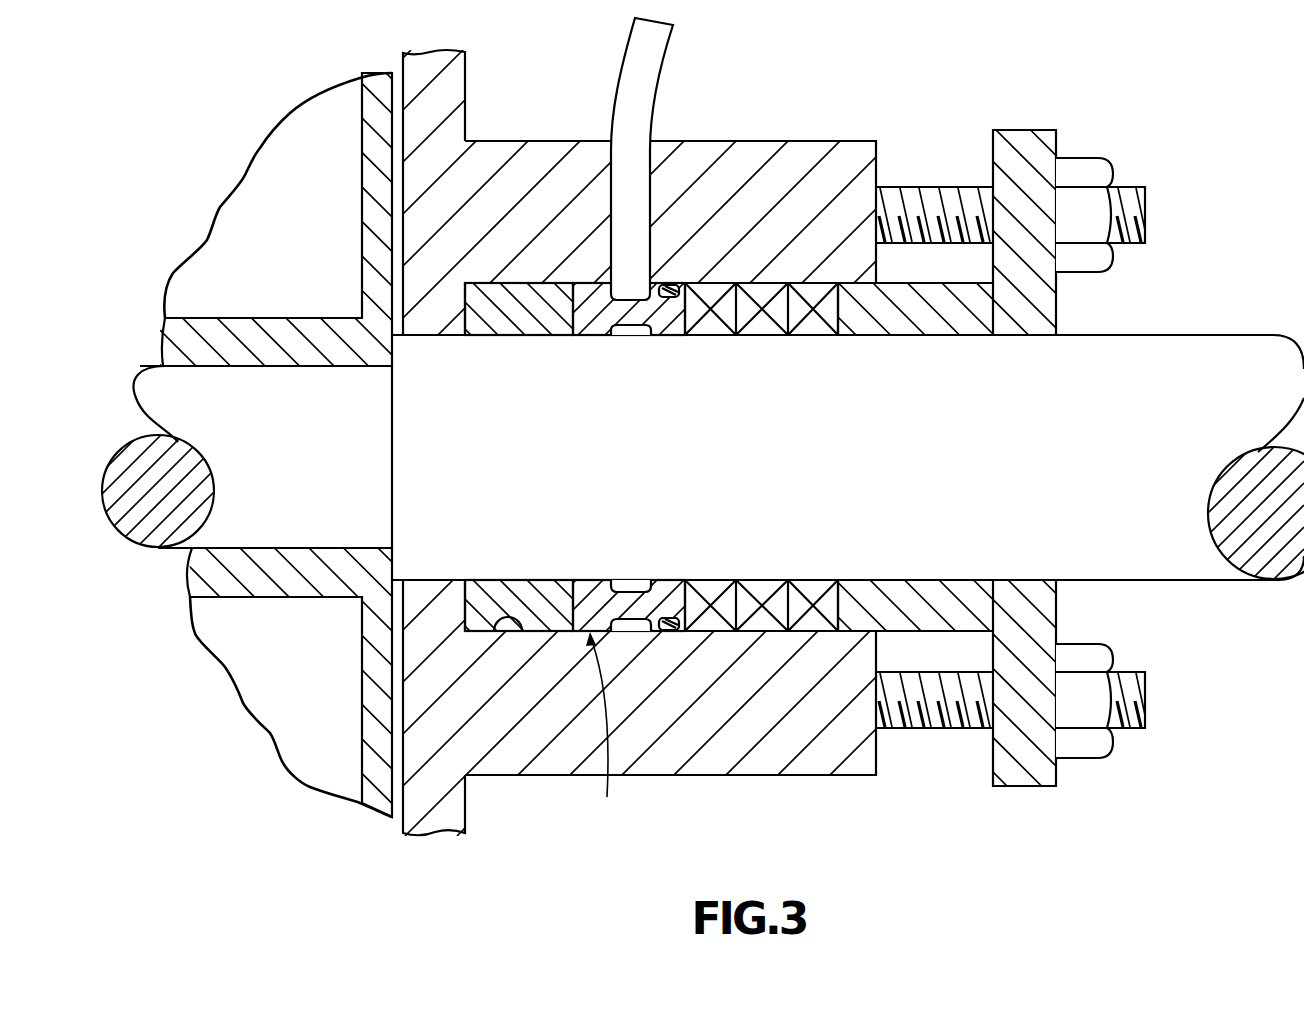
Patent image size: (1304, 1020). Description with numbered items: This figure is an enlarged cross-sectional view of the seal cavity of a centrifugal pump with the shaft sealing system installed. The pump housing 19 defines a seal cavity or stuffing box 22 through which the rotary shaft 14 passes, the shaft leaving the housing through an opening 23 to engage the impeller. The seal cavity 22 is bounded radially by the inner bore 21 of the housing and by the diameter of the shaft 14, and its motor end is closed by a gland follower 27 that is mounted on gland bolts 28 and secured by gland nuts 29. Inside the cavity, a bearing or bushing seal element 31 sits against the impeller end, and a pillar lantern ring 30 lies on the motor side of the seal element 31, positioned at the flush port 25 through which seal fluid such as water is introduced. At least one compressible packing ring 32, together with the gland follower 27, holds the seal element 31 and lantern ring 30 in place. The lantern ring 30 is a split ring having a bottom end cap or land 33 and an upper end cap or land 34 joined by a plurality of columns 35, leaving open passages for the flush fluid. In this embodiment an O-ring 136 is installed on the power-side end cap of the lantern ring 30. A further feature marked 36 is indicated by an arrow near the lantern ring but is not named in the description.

The rotary shaft 14 is at (1216, 356).
The housing 19 is at (770, 192).
The inner bore 21 is at (522, 632).
The seal cavity 22 is at (1058, 583).
The opening 23 is at (428, 337).
The flush port 25 is at (632, 90).
The gland follower 27 is at (1012, 130).
The gland bolts 28 is at (1130, 205).
The gland nuts 29 is at (1087, 170).
The pillar lantern ring 30 is at (590, 341).
The bearing or bushing seal element 31 is at (492, 317).
The compressible packing ring 32 is at (812, 322).
The bottom end cap or land 33 is at (592, 600).
The upper end cap or land 34 is at (672, 585).
The columns 35 is at (636, 605).
The flow arrow 36 is at (605, 730).
The O-ring 136 is at (668, 298).